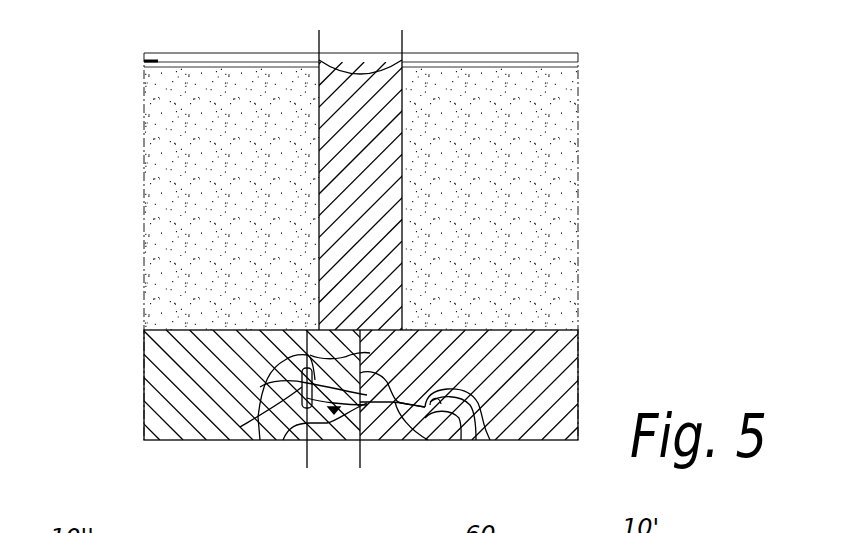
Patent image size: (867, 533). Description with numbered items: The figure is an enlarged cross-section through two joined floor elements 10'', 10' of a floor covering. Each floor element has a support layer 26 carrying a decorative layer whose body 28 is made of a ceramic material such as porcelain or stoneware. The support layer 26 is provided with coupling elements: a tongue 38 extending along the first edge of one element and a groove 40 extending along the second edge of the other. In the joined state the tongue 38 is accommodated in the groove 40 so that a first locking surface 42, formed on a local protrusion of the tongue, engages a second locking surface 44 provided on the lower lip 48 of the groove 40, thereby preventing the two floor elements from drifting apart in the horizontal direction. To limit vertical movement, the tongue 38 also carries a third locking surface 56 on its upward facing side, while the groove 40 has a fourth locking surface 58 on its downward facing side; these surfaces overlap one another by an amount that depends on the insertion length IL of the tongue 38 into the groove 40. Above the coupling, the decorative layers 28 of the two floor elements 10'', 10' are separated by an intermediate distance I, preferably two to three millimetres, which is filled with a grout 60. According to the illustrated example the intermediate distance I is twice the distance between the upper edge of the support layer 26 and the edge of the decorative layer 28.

The second floor element 10'' is at (57, 46).
The floor element 10' is at (622, 37).
The body of the decorative layer 28 is at (176, 187).
The grout 60 is at (399, 90).
The intermediate distance I is at (402, 30).
The support layer 26 is at (153, 380).
The tongue 38 is at (260, 440).
The fourth locking surface 58 is at (240, 427).
The groove 40 is at (283, 440).
The third locking surface 56 is at (398, 440).
The lower lip 48 is at (373, 433).
The insertion length IL is at (360, 462).
The second locking surface 44 is at (455, 440).
The first locking surface 42 is at (428, 440).